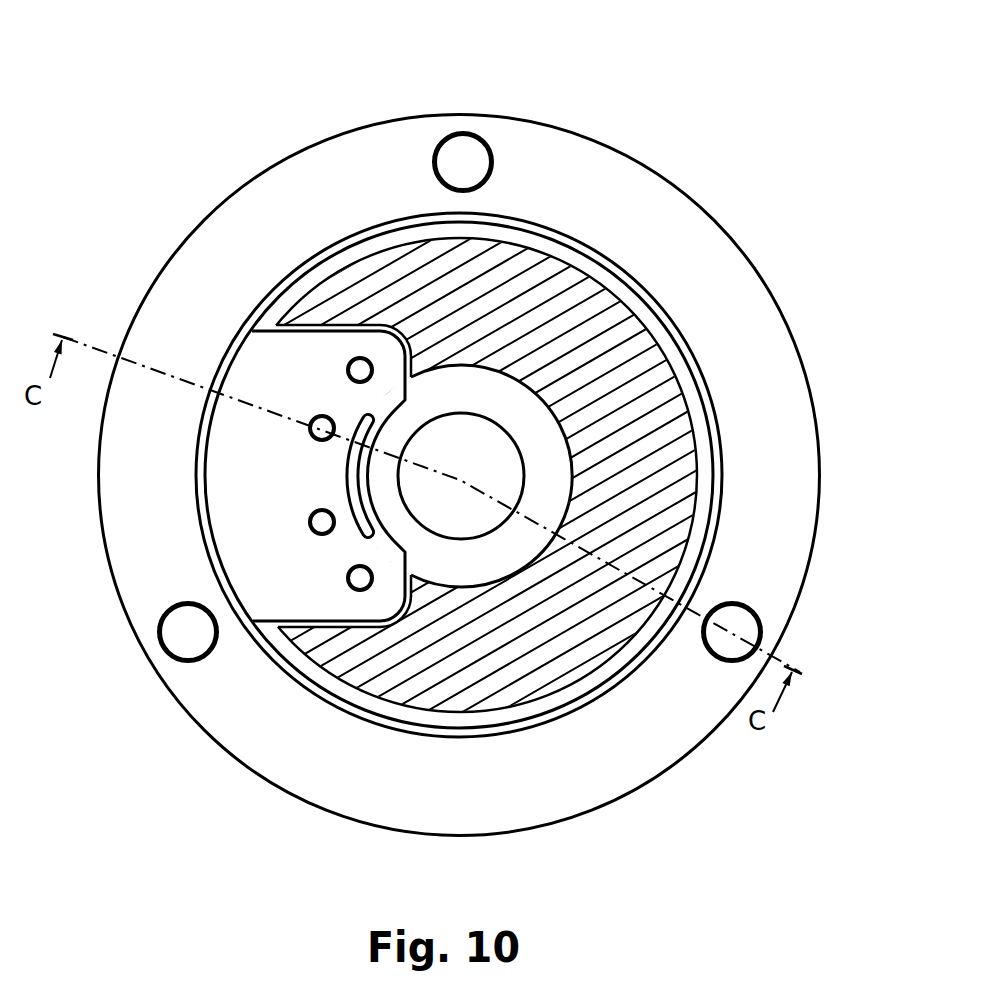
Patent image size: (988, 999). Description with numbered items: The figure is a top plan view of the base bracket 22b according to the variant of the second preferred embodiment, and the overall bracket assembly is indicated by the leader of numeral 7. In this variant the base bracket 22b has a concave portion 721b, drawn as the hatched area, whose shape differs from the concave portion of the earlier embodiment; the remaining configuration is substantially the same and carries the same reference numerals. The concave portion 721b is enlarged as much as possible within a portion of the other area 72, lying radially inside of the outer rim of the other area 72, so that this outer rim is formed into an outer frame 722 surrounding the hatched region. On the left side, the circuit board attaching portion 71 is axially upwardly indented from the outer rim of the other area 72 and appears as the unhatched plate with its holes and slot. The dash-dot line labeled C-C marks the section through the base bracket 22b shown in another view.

The base bracket 22b is at (96, 34).
The rotor unit 7 is at (494, 391).
The circuit board attaching portion 71 is at (258, 380).
The other area 72 is at (438, 392).
The concave portion 721b is at (445, 305).
The outer frame 722 is at (599, 268).